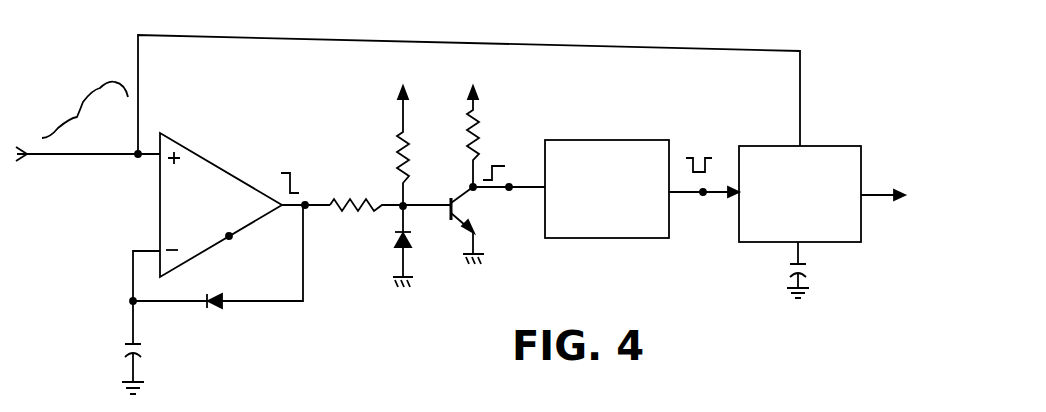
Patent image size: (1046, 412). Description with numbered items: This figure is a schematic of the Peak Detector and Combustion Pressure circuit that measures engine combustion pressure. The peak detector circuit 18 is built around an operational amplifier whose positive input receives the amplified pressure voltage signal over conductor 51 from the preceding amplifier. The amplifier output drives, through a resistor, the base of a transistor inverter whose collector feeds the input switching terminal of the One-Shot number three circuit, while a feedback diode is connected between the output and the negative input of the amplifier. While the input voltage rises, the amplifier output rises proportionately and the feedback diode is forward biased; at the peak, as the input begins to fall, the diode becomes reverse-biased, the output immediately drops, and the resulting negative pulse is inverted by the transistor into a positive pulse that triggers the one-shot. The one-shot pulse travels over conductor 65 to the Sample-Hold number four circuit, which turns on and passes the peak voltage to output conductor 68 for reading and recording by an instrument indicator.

The peak detector circuit 18 is at (578, 104).
The conductor 51 is at (89, 157).
The conductor 65 is at (688, 195).
The output conductor 68 is at (873, 192).